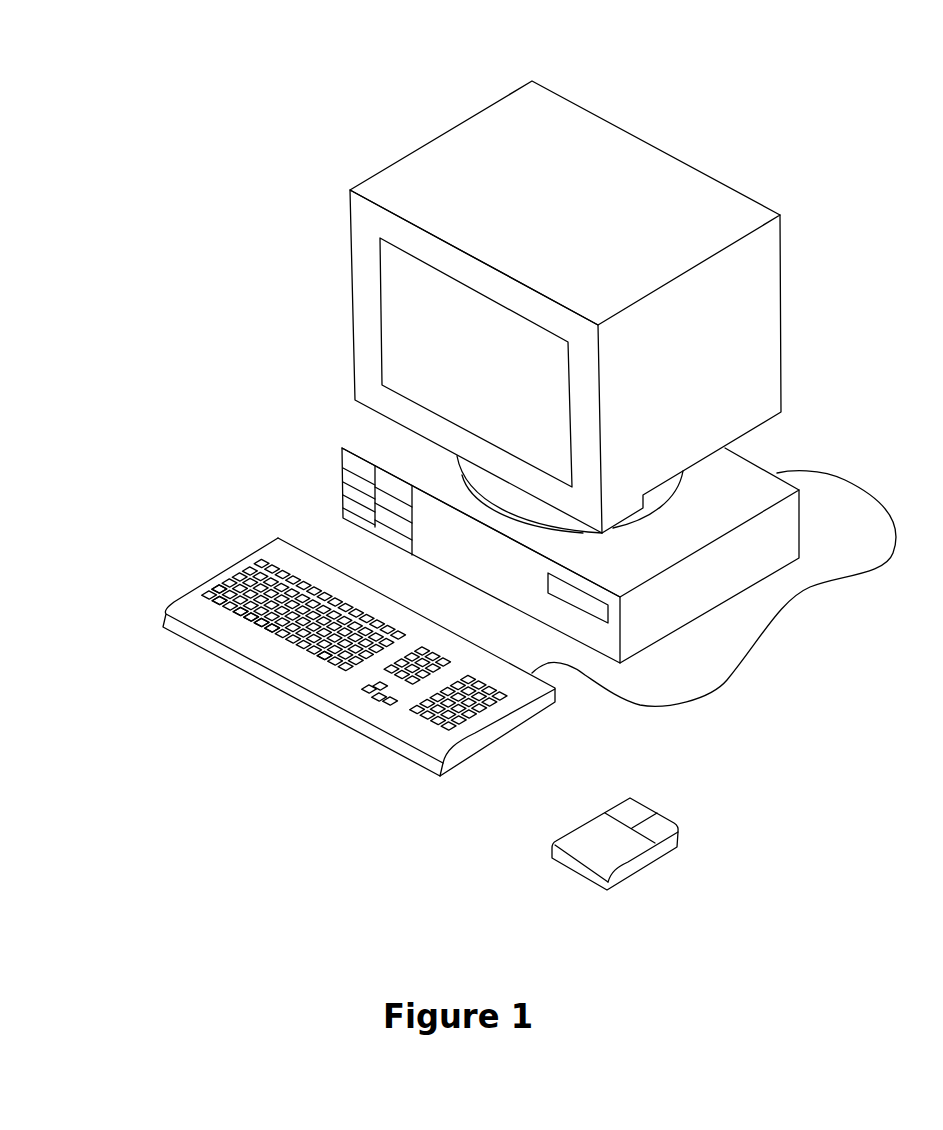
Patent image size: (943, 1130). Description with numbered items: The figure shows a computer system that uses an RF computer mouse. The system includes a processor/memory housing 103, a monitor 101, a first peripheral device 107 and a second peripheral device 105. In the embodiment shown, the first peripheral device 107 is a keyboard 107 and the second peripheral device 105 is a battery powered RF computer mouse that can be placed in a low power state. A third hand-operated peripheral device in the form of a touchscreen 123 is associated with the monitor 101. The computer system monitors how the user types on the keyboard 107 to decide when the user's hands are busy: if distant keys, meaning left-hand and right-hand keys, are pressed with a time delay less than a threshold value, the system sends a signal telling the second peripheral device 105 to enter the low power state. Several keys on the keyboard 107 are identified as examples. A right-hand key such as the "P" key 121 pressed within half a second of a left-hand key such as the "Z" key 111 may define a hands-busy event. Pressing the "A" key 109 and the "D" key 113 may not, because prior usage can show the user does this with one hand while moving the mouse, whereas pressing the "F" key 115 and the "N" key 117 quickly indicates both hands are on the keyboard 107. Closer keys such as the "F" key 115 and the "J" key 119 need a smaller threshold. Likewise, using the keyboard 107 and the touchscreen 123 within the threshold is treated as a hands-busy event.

The monitor 101 is at (647, 148).
The processor/memory housing 103 is at (740, 480).
The second peripheral device 105 is at (653, 832).
The first peripheral device 107 is at (308, 718).
The "A" key 109 is at (228, 588).
The "Z" key 111 is at (220, 597).
The "D" key 113 is at (238, 617).
The "F" key 115 is at (250, 612).
The "N" key 117 is at (270, 620).
The "J" key 119 is at (277, 627).
The "P" key 121 is at (317, 662).
The touchscreen 123 is at (408, 332).